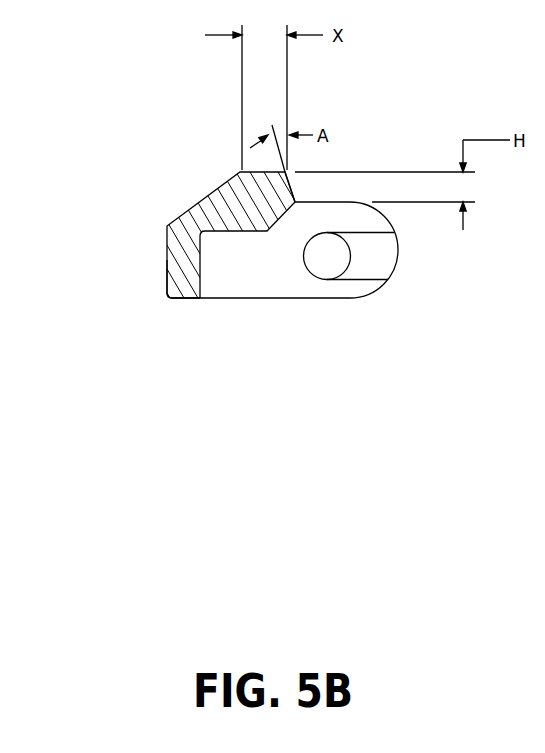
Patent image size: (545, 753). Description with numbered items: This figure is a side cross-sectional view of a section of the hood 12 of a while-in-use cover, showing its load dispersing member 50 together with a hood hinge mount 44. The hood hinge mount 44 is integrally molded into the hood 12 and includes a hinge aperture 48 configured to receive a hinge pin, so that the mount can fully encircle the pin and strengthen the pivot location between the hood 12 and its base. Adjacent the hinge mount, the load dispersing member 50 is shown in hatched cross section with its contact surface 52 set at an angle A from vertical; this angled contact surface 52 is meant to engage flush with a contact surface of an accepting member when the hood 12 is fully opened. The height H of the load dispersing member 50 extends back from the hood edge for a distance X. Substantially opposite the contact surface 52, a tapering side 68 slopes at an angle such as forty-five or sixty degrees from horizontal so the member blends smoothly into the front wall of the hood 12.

The hood 12 is at (167, 297).
The hood hinge mount 44 is at (360, 289).
The hinge aperture 48 is at (315, 263).
The load dispersing member 50 is at (224, 159).
The contact surface 52 is at (298, 180).
The tapering side 68 is at (203, 200).